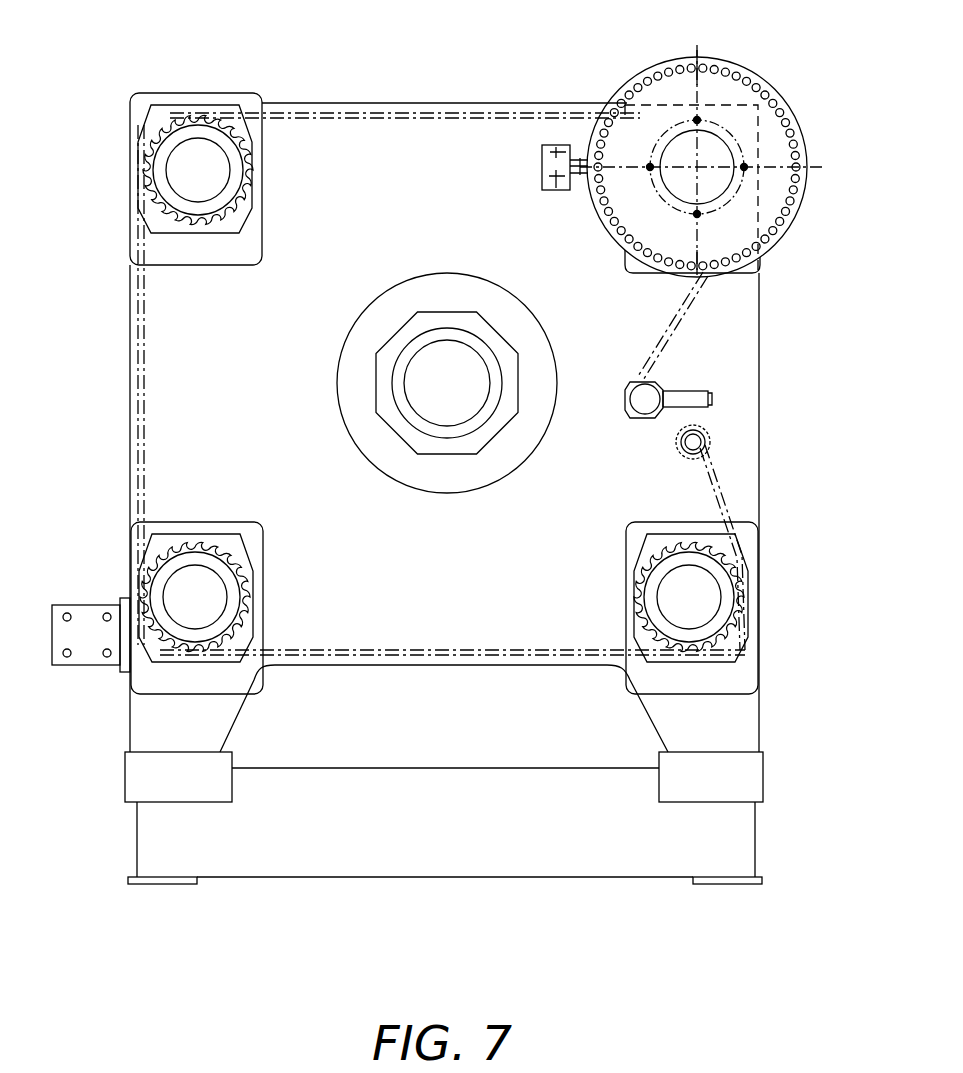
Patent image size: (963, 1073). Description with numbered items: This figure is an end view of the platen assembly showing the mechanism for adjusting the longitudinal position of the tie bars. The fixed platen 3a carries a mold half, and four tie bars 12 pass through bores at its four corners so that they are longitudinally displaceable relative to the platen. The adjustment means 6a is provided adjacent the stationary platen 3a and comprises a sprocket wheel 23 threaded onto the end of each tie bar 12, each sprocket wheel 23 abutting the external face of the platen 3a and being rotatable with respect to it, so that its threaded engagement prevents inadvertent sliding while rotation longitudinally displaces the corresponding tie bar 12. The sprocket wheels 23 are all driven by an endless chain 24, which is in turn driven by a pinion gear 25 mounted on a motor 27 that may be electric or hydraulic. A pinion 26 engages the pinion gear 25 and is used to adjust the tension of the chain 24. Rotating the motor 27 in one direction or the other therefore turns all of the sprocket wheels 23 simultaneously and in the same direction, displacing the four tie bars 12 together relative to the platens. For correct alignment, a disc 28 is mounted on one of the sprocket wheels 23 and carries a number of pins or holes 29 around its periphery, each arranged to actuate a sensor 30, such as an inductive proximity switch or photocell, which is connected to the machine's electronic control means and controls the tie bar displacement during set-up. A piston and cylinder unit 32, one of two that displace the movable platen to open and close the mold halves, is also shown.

The fixed platen 3a is at (326, 145).
The tie bar 12 is at (185, 165).
The sprocket wheel 23 is at (166, 200).
The endless chain 24 is at (140, 410).
The pinion gear 25 is at (645, 412).
The pinion 26 is at (702, 447).
The motor 27 is at (712, 398).
The disc 28 is at (765, 90).
The pins or holes 29 is at (797, 157).
The sensor 30 is at (552, 192).
The piston and cylinder unit 32 is at (84, 645).
The adjustment means 6a is at (856, 460).